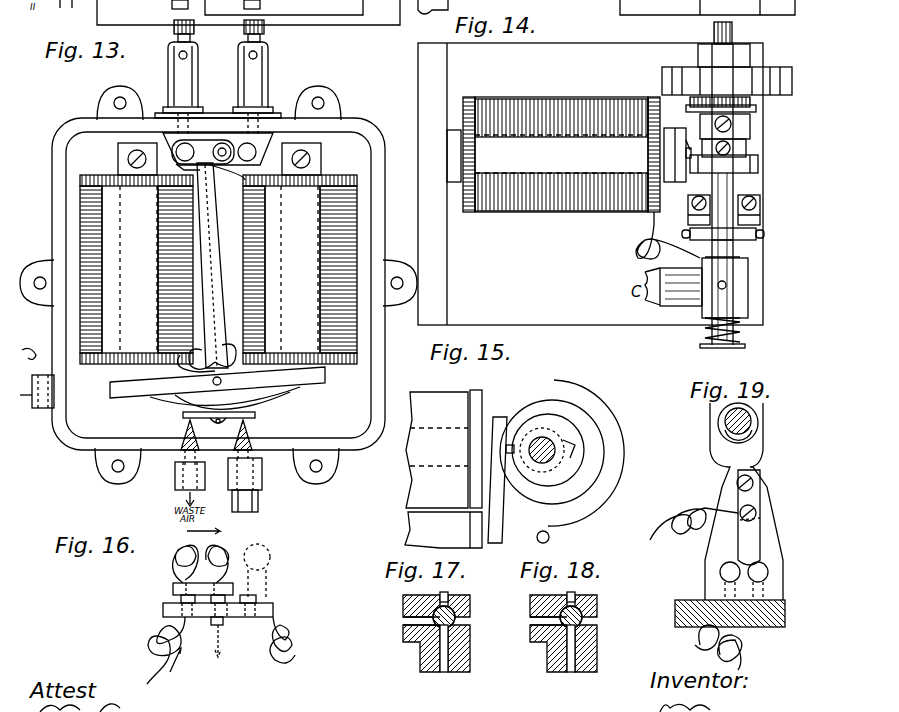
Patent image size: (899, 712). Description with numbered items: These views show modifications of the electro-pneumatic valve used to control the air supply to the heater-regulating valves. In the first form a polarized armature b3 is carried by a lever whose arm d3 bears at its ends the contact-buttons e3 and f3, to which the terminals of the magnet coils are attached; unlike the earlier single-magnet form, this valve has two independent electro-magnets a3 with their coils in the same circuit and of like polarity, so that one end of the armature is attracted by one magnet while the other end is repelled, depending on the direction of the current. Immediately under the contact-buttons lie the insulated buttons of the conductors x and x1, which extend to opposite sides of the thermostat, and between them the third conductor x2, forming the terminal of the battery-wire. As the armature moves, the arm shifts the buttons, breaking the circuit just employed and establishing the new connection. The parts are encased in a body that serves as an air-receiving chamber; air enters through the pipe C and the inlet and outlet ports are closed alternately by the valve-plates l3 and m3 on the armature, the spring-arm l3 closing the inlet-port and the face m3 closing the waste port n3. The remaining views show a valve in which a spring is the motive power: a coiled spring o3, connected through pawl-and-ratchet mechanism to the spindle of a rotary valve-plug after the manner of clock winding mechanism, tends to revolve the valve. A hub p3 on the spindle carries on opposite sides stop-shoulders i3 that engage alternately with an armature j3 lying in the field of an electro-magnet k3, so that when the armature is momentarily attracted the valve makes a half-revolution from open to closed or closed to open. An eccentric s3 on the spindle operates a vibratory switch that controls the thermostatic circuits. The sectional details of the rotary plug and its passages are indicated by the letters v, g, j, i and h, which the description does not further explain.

In FIG. 13, the electro-magnet a3 is at (218, 269).
In FIG. 13, the polarized armature b3 is at (217, 382).
In FIG. 13, the arm d3 is at (208, 267).
In FIG. 16, the arm d3 is at (178, 590).
In FIG. 13, the contact-button e3 is at (182, 156).
In FIG. 16, the contact-button e3 is at (262, 590).
In FIG. 13, the contact-button f3 is at (220, 165).
In FIG. 16, the contact-button f3 is at (178, 600).
In FIG. 13, the face m3 is at (182, 411).
In FIG. 13, the waste port n3 is at (182, 425).
In FIG. 13, the spring-arm l3 is at (250, 412).
In FIG. 14, the spring / electro-magnet k3 is at (581, 178).
In FIG. 15, the spring / electro-magnet k3 is at (443, 469).
In FIG. 14, the coiled spring o3 is at (727, 81).
In FIG. 15, the coiled spring o3 is at (562, 453).
In FIG. 14, the hub p3 is at (724, 162).
In FIG. 15, the hub p3 is at (535, 446).
In FIG. 14, the stop-shoulder i3 is at (692, 140).
In FIG. 15, the stop-shoulder i3 is at (552, 452).
In FIG. 14, the shoulder or armature j3 is at (676, 155).
In FIG. 15, the shoulder or armature j3 is at (503, 481).
In FIG. 14, the eccentric s3 is at (745, 244).
In FIG. 19, the eccentric s3 is at (722, 425).
In FIG. 13, the conductor x is at (186, 148).
In FIG. 19, the conductor x is at (761, 581).
In FIG. 16, the conductor x is at (268, 607).
In FIG. 13, the conductor x1 is at (235, 8).
In FIG. 16, the conductor x1 is at (165, 612).
In FIG. 13, the third conductor x2 is at (221, 142).
In FIG. 19, the third conductor x2 is at (730, 581).
In FIG. 16, the third conductor x2 is at (218, 615).
In FIG. 13, the pipe C is at (262, 490).
In FIG. 14, the fork lever v is at (752, 236).
In FIG. 19, the fork lever v is at (757, 462).
In FIG. 14, the port g is at (700, 258).
In FIG. 17, the port g is at (455, 612).
In FIG. 18, the port g is at (582, 614).
In FIG. 14, the valve body j is at (725, 288).
In FIG. 17, the valve body j is at (448, 600).
In FIG. 18, the valve body j is at (578, 582).
In FIG. 14, the inlet passage i is at (673, 287).
In FIG. 17, the inlet passage i is at (402, 622).
In FIG. 18, the inlet passage i is at (532, 624).
In FIG. 17, the outlet passage h is at (447, 665).
In FIG. 18, the outlet passage h is at (570, 665).